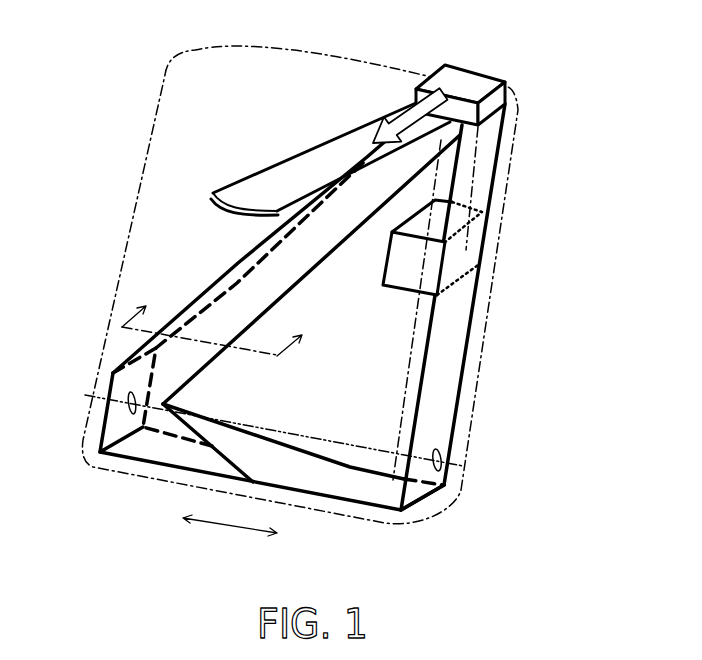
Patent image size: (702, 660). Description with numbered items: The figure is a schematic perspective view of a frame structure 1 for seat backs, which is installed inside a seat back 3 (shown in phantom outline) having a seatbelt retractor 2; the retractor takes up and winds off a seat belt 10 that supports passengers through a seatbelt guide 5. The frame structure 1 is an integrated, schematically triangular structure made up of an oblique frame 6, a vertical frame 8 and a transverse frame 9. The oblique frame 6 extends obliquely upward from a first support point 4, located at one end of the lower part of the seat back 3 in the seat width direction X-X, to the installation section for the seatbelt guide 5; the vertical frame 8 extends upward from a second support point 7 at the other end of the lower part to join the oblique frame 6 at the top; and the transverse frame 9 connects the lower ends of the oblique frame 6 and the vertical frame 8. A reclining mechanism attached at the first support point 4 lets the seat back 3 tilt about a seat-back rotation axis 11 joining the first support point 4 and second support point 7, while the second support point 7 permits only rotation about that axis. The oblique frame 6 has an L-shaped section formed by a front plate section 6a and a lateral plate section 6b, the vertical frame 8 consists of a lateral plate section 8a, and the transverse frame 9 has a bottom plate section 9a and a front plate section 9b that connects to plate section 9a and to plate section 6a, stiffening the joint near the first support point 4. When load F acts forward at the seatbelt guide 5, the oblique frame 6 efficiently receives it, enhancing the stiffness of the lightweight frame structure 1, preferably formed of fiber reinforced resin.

The frame structure 1 is at (317, 295).
The seatbelt retractor 2 is at (415, 268).
The seat back 3 is at (178, 138).
The first support point 4 is at (131, 400).
The seatbelt guide 5 is at (430, 78).
The oblique frame 6 is at (260, 258).
The plate section 6a is at (293, 262).
The plate section 6b is at (208, 288).
The second support point 7 is at (450, 450).
The vertical frame 8 is at (480, 307).
The plate section 8a is at (450, 372).
The transverse frame 9 is at (264, 452).
The plate section 9a is at (287, 468).
The plate section 9b is at (160, 450).
The seat belt 10 is at (270, 180).
The seat-back rotation axis 11 is at (398, 497).